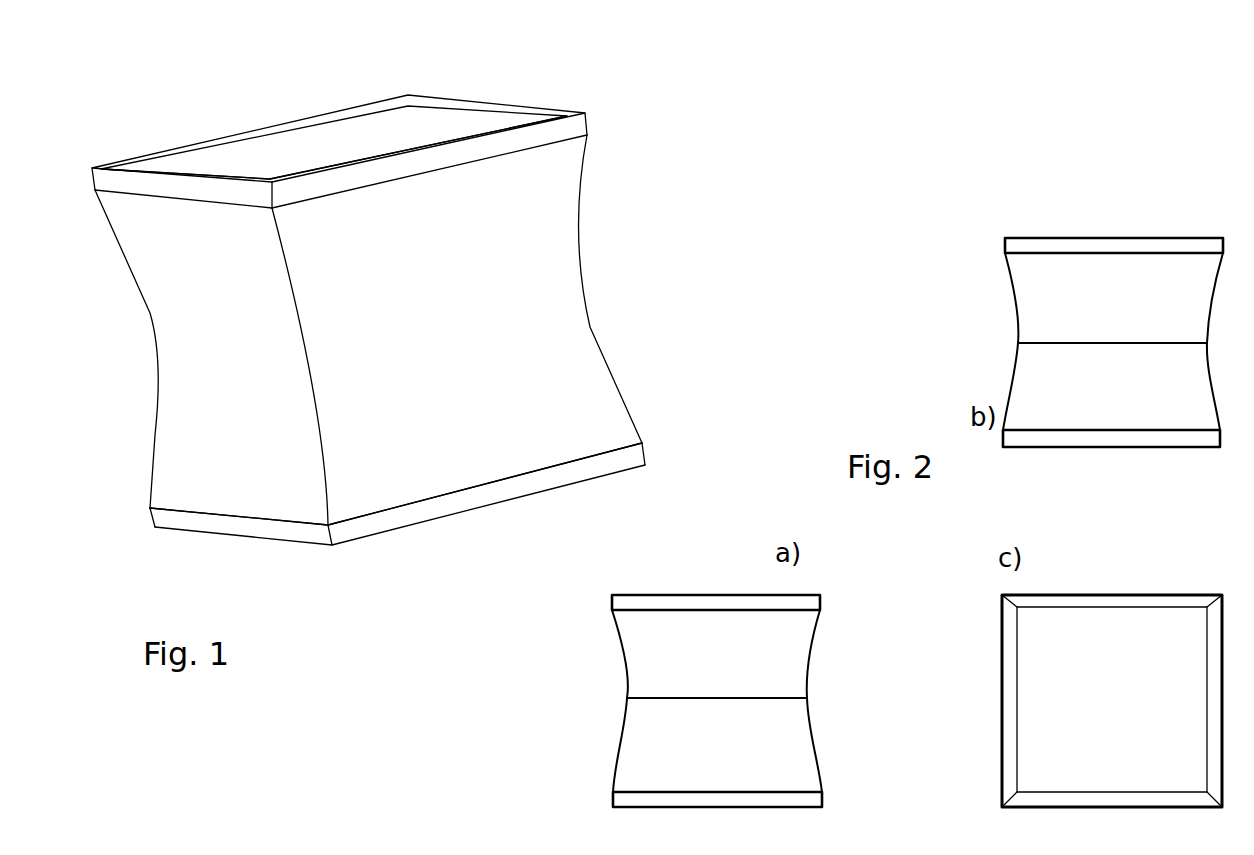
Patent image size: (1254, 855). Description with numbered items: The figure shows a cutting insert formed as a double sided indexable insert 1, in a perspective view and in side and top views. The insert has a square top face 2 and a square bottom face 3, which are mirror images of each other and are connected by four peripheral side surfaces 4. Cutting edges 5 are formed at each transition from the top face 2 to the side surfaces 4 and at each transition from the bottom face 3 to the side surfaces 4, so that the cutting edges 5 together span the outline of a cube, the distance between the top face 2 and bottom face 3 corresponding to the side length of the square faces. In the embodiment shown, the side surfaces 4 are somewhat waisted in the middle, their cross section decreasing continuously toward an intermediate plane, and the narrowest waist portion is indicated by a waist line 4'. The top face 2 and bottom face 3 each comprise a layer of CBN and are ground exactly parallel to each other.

In FIG. 1, the double sided indexable insert 1 is at (677, 135).
In FIG. 1, the top face 2 is at (352, 128).
In FIG. 2, the top face 2 is at (708, 584).
In FIG. 2, the bottom face 3 is at (1143, 450).
In FIG. 1, the peripheral side surface 4 is at (372, 330).
In FIG. 2, the peripheral side surface 4 is at (917, 522).
In FIG. 2, the waist line 4' is at (917, 499).
In FIG. 1, the cutting edge 5 is at (442, 143).